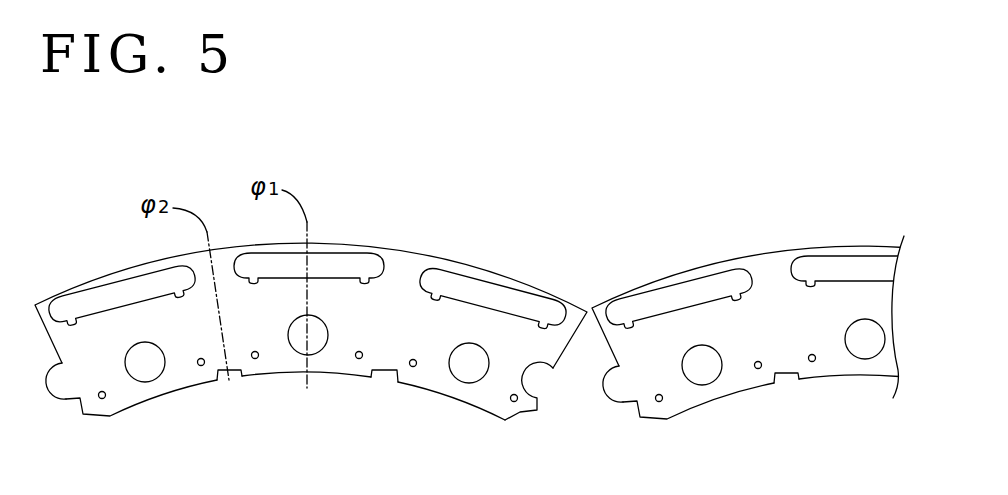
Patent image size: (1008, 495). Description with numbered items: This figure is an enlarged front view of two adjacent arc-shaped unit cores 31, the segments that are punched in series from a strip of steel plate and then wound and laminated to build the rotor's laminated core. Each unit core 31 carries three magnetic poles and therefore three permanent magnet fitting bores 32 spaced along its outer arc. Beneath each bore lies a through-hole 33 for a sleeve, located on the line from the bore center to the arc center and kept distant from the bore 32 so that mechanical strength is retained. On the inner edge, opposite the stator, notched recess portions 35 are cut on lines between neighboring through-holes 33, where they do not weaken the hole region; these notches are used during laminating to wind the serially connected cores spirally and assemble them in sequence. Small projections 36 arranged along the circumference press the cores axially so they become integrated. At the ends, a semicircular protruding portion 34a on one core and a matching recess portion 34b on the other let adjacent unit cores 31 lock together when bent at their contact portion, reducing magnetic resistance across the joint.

The arc-shaped unit core 31 is at (405, 258).
The permanent magnet fitting bore 32 is at (103, 298).
The through-hole 33 is at (152, 376).
The protruding portion 34a is at (64, 401).
The recess portion 34b is at (535, 390).
The notched recess portion 35 is at (235, 382).
The projection 36 is at (255, 352).